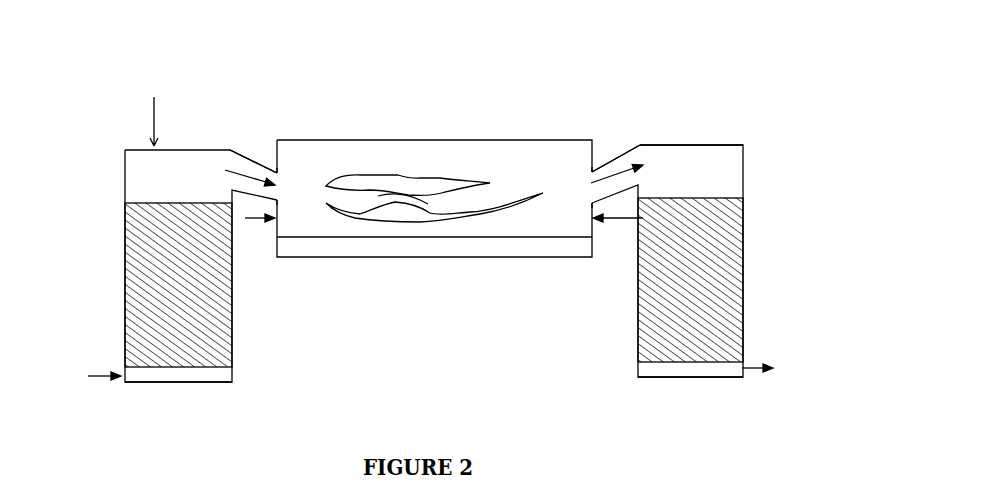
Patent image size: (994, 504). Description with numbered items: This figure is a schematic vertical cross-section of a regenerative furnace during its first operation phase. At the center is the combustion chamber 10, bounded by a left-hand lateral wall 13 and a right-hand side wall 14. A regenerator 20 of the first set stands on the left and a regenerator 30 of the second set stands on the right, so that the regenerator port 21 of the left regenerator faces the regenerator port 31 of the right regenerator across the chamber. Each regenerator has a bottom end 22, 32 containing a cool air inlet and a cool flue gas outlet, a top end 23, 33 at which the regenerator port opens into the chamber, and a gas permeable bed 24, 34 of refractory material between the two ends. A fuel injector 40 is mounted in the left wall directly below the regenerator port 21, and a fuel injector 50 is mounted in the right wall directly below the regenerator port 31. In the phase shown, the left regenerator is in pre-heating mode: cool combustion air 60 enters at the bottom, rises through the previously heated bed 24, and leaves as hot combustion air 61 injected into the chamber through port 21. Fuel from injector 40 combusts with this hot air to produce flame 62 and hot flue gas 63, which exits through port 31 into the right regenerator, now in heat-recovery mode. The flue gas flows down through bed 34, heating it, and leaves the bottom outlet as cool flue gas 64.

The combustion chamber 10 is at (434, 198).
The left-hand lateral wall 13 is at (278, 148).
The right-hand side wall 14 is at (594, 145).
The regenerator of the first set 20 is at (110, 247).
The regenerator port 21 is at (248, 158).
The bottom end of the regenerator 22 is at (192, 378).
The top end of the regenerator 23 is at (153, 109).
The gas permeable bed of refractory material 24 is at (150, 282).
The regenerator of the second set 30 is at (757, 261).
The regenerator port 31 is at (615, 158).
The bottom end of the regenerator 32 is at (684, 378).
The top end of the regenerator 33 is at (728, 133).
The gas permeable bed of refractory material 34 is at (738, 300).
The fuel injector of the first set 40 is at (257, 232).
The fuel injector of the second set 50 is at (618, 232).
The cool combustion air 60 is at (86, 379).
The hot combustion air 61 is at (232, 169).
The flame 62 is at (373, 178).
The hot flue gas 63 is at (603, 184).
The cool flue gas 64 is at (772, 368).